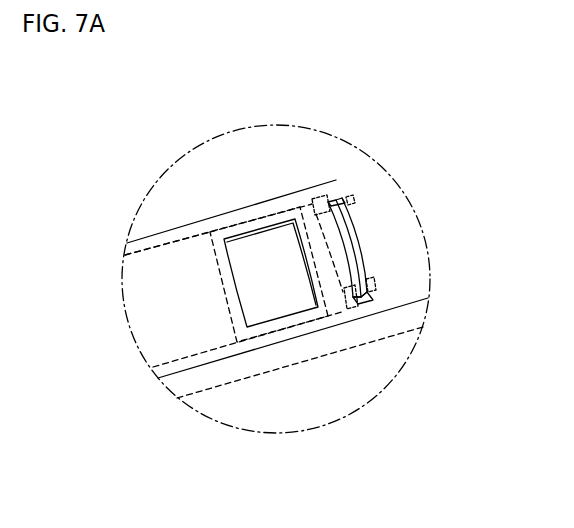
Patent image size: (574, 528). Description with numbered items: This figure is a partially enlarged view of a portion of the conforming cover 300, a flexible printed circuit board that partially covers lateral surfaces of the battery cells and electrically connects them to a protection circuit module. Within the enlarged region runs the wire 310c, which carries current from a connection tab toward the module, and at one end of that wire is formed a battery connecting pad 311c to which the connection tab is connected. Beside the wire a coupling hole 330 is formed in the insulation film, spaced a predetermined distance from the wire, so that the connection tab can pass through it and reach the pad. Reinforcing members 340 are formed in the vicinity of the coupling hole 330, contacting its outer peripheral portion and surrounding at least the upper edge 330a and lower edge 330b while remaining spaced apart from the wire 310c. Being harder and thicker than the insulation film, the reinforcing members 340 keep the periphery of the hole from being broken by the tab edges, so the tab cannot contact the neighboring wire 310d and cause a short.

The conforming cover 300 is at (190, 223).
The wire 310c is at (157, 298).
The wire 310d is at (320, 413).
The battery connecting pad 311c is at (268, 242).
The coupling hole 330 is at (353, 247).
The upper edge 330a is at (324, 197).
The lower edge 330b is at (352, 301).
The reinforcing member 340 is at (320, 197).